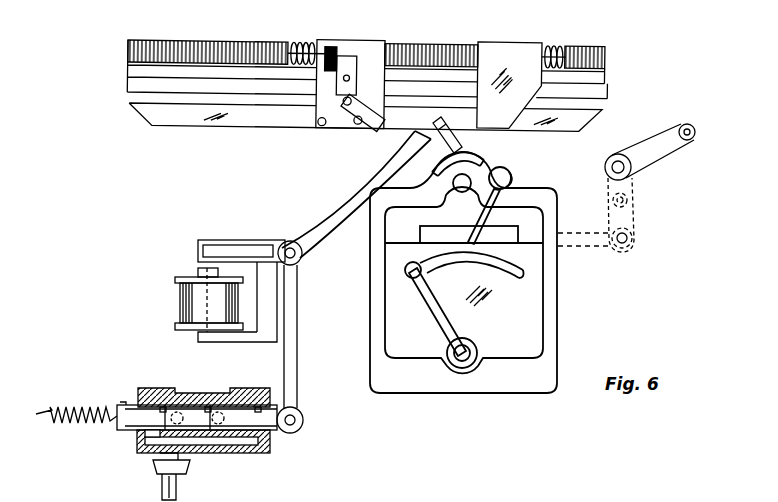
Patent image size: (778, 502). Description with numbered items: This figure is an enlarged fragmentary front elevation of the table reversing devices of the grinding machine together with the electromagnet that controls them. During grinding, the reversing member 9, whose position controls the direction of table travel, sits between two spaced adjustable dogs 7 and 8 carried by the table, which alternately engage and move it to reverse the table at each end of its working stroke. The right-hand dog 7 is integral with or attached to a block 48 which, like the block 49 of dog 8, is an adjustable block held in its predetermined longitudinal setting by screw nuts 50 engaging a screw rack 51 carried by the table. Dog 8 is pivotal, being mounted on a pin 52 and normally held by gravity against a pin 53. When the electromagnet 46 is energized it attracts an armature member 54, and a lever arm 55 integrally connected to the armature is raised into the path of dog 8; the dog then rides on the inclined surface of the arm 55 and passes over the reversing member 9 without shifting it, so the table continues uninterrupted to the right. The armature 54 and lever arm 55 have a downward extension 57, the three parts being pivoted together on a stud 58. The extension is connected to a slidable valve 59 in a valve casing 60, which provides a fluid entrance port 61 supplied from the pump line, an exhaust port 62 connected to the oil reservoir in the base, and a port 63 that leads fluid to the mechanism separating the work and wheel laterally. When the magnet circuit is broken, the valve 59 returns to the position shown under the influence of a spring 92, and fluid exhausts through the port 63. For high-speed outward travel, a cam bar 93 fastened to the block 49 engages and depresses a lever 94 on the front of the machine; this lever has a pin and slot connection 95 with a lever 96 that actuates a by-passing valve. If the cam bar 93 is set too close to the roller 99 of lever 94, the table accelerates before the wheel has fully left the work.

The dog 7 is at (512, 120).
The dog 8 is at (367, 115).
The reversing member 9 is at (443, 117).
The electromagnet 46 is at (188, 305).
The slide block 48 is at (507, 47).
The block 49 is at (352, 48).
The screw nuts 50 is at (302, 42).
The screw rack 51 is at (610, 58).
The pin 52 is at (343, 101).
The pin 53 is at (354, 120).
The armature member 54 is at (238, 250).
The lever arm 55 is at (320, 230).
The downward extension 57 is at (292, 335).
The stud 58 is at (300, 257).
The slidable valve 59 is at (253, 420).
The valve casing 60 is at (268, 447).
The fluid entrance port 61 is at (217, 422).
The exhaust port 62 is at (143, 448).
The port 63 is at (168, 390).
The spring 92 is at (50, 422).
The cam bar 93 is at (607, 118).
The lever 94 is at (668, 148).
The pin and slot connection 95 is at (622, 205).
The lever 96 is at (583, 246).
The roller 99 is at (695, 128).